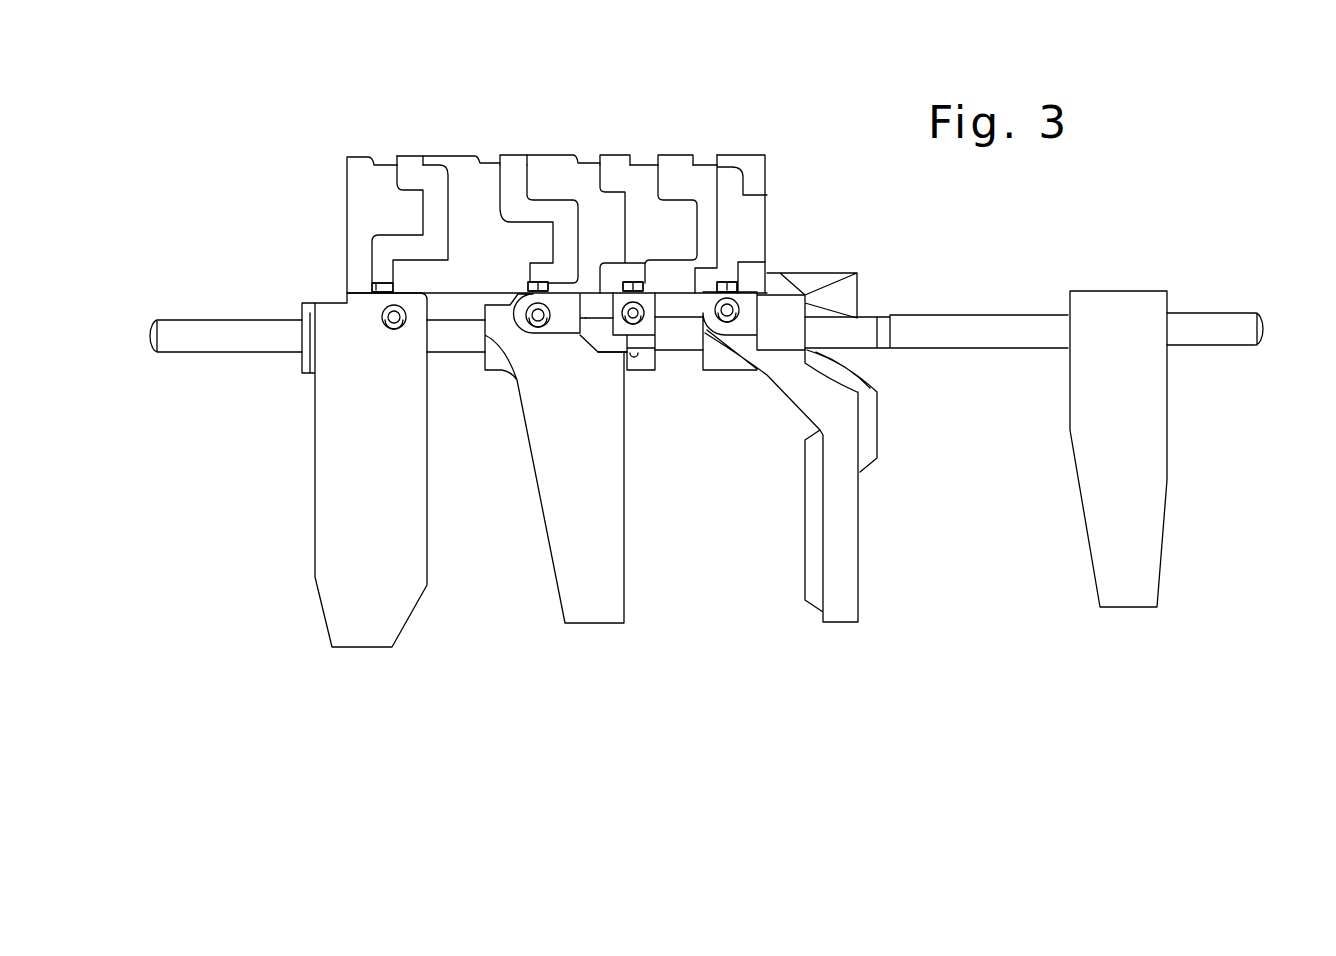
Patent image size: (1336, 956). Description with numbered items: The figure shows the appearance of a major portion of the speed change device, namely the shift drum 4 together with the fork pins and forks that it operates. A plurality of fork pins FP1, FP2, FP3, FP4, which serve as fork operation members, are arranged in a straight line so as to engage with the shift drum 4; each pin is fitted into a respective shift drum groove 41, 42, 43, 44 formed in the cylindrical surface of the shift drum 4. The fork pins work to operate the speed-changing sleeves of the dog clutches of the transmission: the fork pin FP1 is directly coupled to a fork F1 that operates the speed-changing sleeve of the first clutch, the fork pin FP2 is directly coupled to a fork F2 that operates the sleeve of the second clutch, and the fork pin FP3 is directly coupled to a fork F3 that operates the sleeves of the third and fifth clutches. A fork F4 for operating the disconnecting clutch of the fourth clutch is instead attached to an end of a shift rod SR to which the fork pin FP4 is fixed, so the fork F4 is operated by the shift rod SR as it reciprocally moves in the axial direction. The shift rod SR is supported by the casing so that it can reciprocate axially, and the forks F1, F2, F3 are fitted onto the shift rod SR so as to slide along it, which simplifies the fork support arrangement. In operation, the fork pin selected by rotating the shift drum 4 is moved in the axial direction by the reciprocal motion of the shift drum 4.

The shift drum 4 is at (554, 157).
The shift drum groove 41 is at (407, 163).
The shift drum groove 42 is at (513, 170).
The shift drum groove 43 is at (708, 172).
The shift drum groove 44 is at (618, 163).
The fork pin FP1 is at (381, 283).
The fork pin FP2 is at (535, 282).
The fork pin FP3 is at (723, 282).
The fork pin FP4 is at (633, 282).
The fork F1 is at (420, 532).
The fork F2 is at (615, 546).
The fork F3 is at (850, 562).
The fork F4 is at (1158, 506).
The shift rod SR is at (962, 352).